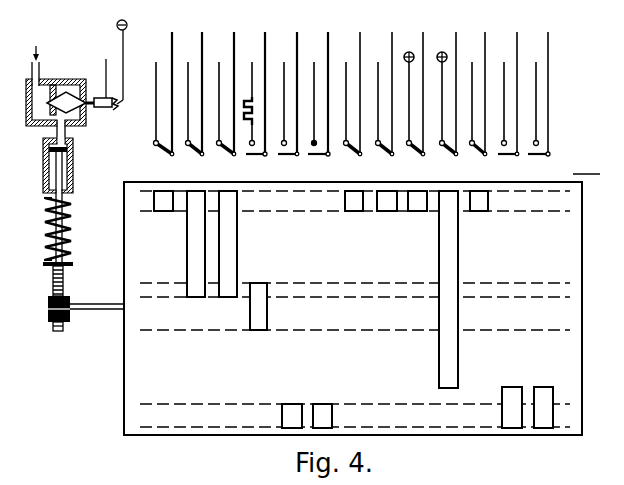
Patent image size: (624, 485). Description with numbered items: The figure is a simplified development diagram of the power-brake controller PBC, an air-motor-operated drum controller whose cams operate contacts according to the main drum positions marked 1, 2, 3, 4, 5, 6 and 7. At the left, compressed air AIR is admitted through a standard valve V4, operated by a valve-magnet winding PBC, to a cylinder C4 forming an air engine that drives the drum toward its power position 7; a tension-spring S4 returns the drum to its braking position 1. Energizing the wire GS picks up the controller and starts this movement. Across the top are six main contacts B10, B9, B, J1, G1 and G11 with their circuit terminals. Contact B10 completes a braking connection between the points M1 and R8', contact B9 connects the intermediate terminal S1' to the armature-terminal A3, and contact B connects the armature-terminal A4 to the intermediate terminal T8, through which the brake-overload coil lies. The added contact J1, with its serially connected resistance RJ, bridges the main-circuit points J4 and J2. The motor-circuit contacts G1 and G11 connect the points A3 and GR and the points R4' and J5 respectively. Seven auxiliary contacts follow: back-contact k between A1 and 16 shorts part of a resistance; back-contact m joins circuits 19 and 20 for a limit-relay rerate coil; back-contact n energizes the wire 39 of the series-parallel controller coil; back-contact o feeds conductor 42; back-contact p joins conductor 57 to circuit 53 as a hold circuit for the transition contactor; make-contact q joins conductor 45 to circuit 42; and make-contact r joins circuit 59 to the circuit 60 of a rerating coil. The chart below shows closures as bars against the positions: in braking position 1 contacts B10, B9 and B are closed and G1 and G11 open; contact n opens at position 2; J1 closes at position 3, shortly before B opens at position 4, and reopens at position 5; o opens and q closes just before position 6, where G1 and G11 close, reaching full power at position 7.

The compressed air supply AIR is at (36, 46).
The standard valve V4 is at (50, 80).
The GS wire GS is at (105, 72).
The power-brake controller PBC is at (347, 97).
The cylinder C4 is at (74, 161).
The tension-spring S4 is at (70, 229).
The terminal M1 is at (156, 94).
The resistance R8' is at (172, 85).
The braking-circuit contact B10 is at (162, 158).
The intermediate terminal S1' is at (189, 94).
The armature-terminal A3 is at (242, 85).
The braking-circuit contact B9 is at (195, 158).
The intermediate terminal T8 is at (219, 94).
The armature-terminal A4 is at (233, 85).
The braking-circuit contact B is at (226, 158).
The main-circuit point J4 is at (251, 71).
The resistance RJ is at (244, 104).
The intermediate terminal J2 is at (265, 85).
The contact J1 is at (256, 150).
The terminal GR is at (293, 85).
The motor-circuit contact G1 is at (288, 158).
The resistance R4' is at (316, 96).
The terminal J5 is at (328, 85).
The motor-circuit contact G11 is at (320, 163).
The armature-terminal A1 is at (345, 94).
The circuit point 16 is at (360, 85).
The auxiliary back-contact k is at (353, 158).
The circuit 19 is at (378, 94).
The circuit 20 is at (392, 85).
The auxiliary back-contact m is at (385, 158).
The energizing-wire 39 is at (423, 85).
The auxiliary back-contact n is at (414, 113).
The conductor 42 is at (486, 85).
The auxiliary back-contact o is at (447, 113).
The conductor 57 is at (472, 94).
The energizing-circuit 53 is at (485, 85).
The auxiliary back-contact p is at (478, 158).
The conductor 45 is at (504, 94).
The auxiliary make-contact q is at (508, 158).
The circuit 59 is at (536, 94).
The energizing-circuit 60 is at (548, 85).
The auxiliary make-contact r is at (539, 158).
The drum position 1 is at (351, 191).
The drum position 2 is at (351, 211).
The drum position 3 is at (351, 283).
The drum position 4 is at (351, 297).
The drum position 5 is at (351, 330).
The drum position 6 is at (351, 404).
The drum position 7 is at (351, 427).